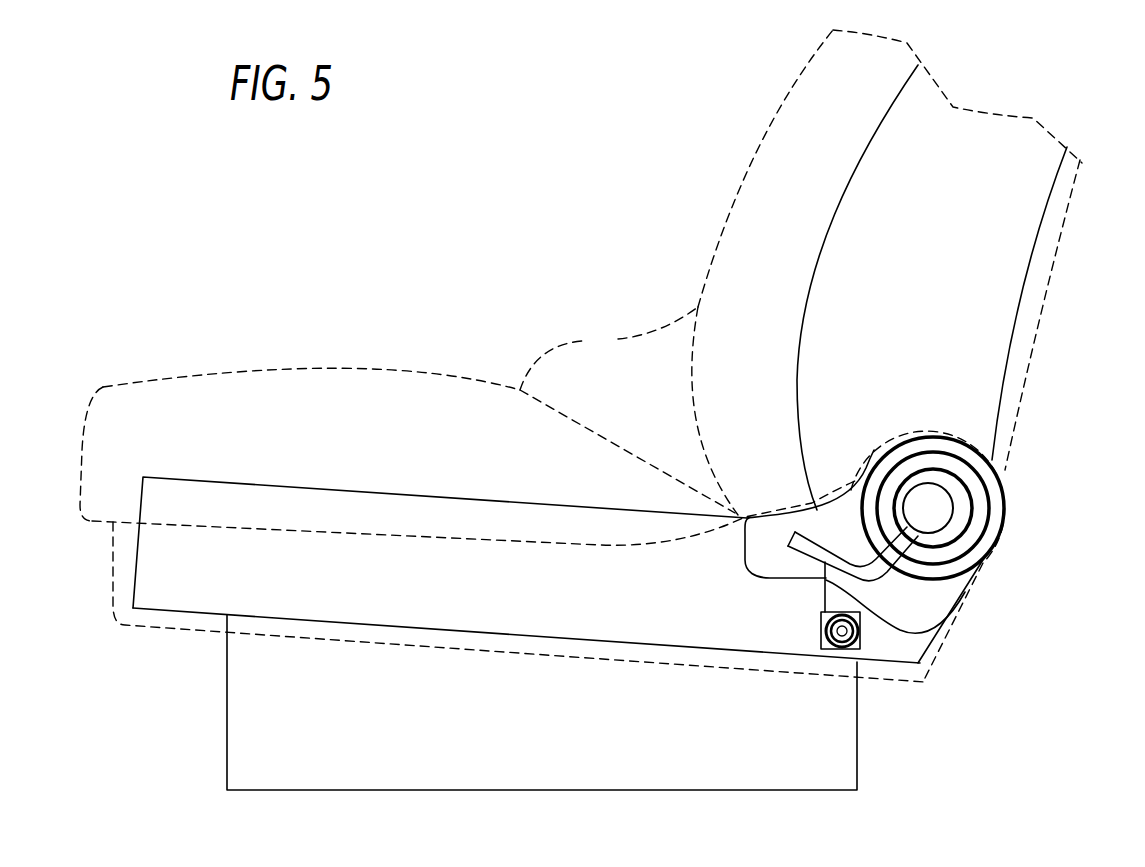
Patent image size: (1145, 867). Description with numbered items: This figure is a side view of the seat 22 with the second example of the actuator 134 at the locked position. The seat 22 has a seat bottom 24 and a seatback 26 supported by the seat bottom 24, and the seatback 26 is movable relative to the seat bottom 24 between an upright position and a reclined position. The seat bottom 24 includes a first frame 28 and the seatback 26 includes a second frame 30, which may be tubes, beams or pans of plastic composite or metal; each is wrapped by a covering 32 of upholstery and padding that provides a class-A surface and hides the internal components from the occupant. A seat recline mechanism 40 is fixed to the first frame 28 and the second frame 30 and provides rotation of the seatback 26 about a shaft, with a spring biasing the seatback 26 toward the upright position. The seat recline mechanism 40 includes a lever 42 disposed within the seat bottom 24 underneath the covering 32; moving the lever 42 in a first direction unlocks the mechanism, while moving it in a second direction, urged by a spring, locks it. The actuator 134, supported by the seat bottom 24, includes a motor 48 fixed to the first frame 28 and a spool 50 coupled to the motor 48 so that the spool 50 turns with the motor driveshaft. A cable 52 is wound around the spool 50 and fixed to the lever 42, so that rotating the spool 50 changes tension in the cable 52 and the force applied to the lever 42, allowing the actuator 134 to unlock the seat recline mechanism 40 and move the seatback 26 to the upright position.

The seat 22 is at (570, 173).
The seat bottom 24 is at (380, 338).
The seatback 26 is at (728, 147).
The first frame 28 is at (250, 483).
The second frame 30 is at (1005, 203).
The covering 32 is at (609, 348).
The seat recline mechanism 40 is at (932, 510).
The lever 42 is at (873, 568).
The motor 48 is at (818, 637).
The spool 50 is at (843, 652).
The cable 52 is at (823, 594).
The actuator 134 is at (788, 591).